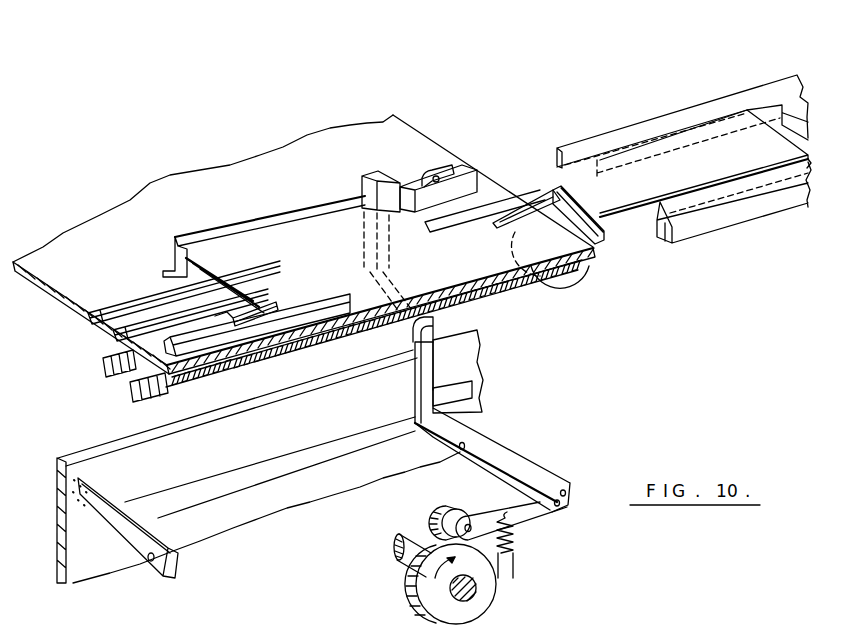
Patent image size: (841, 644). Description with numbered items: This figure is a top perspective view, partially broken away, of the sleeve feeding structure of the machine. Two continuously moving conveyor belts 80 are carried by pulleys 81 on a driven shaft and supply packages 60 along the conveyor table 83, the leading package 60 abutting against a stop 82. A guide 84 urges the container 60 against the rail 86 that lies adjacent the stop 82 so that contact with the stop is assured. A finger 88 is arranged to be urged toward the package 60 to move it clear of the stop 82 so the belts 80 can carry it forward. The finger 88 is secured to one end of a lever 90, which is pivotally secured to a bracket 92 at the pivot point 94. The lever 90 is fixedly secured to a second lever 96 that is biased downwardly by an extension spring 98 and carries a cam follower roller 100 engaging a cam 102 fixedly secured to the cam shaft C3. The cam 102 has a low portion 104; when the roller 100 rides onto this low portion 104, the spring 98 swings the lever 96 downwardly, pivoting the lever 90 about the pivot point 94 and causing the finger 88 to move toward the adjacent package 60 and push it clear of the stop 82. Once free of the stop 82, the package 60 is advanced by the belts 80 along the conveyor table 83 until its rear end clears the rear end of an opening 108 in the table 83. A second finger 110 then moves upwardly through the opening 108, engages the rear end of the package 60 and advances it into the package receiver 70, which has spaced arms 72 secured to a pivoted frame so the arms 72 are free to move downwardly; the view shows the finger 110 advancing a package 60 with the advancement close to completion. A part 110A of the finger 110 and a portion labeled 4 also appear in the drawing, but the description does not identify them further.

The frame 4 is at (471, 372).
The package 60 is at (322, 258).
The package receiver 70 is at (684, 131).
The spaced arms 72 is at (652, 123).
The conveyor belts 80 is at (137, 302).
The pulleys 81 is at (558, 270).
The stop 82 is at (412, 185).
The conveyor table 83 is at (166, 197).
The guide 84 is at (195, 300).
The rail 86 is at (304, 208).
The finger 88 is at (371, 175).
The lever 90 is at (533, 476).
The bracket 92 is at (490, 423).
The pivot point 94 is at (457, 447).
The lever 96 is at (532, 512).
The extension spring 98 is at (514, 571).
The cam follower roller 100 is at (452, 507).
The cam 102 is at (416, 612).
The low portion 104 is at (492, 596).
The opening 108 is at (495, 216).
The finger 110 is at (573, 207).
The blade 110A is at (553, 188).
The cam shaft C3 is at (396, 555).